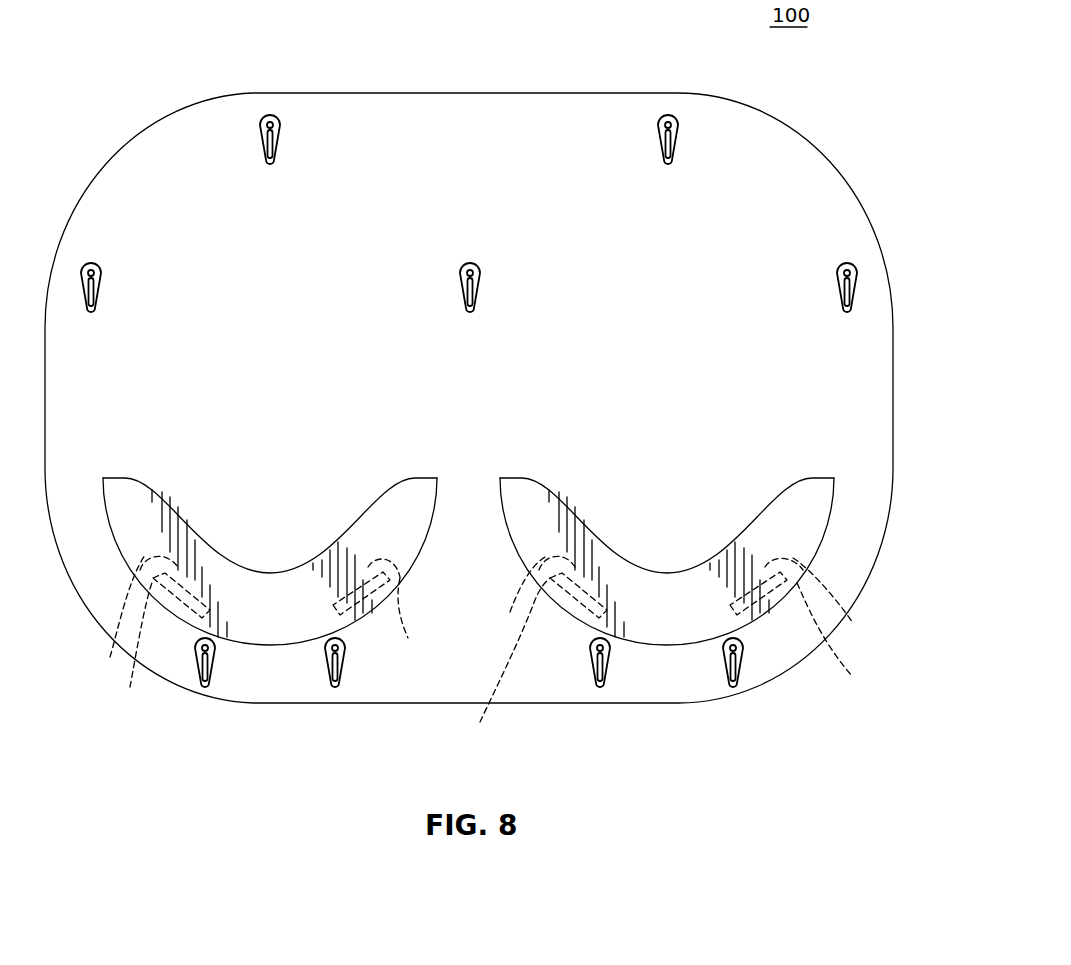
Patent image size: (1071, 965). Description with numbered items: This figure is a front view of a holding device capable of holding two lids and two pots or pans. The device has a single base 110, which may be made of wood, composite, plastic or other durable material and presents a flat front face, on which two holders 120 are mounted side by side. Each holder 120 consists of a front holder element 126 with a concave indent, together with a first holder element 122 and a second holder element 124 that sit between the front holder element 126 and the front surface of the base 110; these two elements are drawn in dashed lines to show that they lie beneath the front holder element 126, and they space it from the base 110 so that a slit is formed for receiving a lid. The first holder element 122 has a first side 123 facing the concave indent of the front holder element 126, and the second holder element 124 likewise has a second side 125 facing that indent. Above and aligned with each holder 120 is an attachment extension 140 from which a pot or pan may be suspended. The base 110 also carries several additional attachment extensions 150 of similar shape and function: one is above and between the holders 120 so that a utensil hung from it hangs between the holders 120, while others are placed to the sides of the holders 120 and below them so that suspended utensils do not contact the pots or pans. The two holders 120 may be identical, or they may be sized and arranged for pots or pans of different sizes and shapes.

The base 110 is at (158, 171).
The holder 120 is at (490, 612).
The first holder element 122 is at (128, 686).
The first side 123 is at (108, 658).
The second holder element 124 is at (404, 637).
The second side 125 is at (405, 580).
The front holder element 126 is at (118, 510).
The attachment extension 140 is at (269, 122).
The additional attachment extension 150 is at (92, 272).